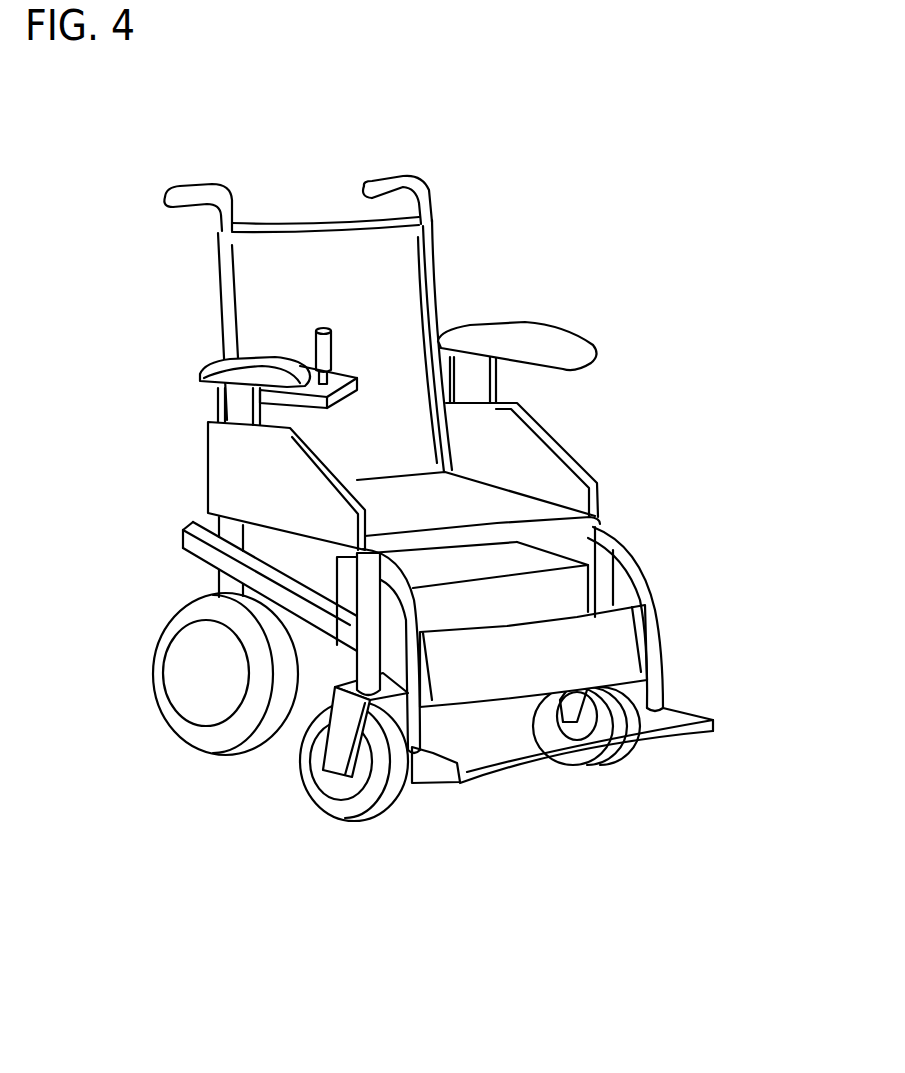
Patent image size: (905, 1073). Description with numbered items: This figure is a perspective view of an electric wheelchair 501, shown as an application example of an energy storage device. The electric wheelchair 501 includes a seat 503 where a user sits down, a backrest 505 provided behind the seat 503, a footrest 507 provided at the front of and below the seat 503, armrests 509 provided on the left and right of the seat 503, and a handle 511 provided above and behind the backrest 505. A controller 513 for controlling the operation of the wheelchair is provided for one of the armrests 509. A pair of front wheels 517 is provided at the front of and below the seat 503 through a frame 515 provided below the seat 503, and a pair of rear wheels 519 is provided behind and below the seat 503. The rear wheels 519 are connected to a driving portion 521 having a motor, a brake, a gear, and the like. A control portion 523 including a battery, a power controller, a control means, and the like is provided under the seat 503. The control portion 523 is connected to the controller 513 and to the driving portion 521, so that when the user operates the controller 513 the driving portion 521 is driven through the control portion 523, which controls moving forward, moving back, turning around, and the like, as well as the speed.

The electric wheelchair 501 is at (559, 192).
The seat 503 is at (513, 510).
The backrest 505 is at (383, 327).
The footrest 507 is at (520, 757).
The armrests 509 is at (557, 347).
The handle 511 is at (400, 181).
The controller 513 is at (320, 352).
The frame 515 is at (600, 582).
The front wheels 517 is at (355, 787).
The rear wheels 519 is at (203, 698).
The driving portion 521 is at (317, 670).
The control portion 523 is at (570, 600).